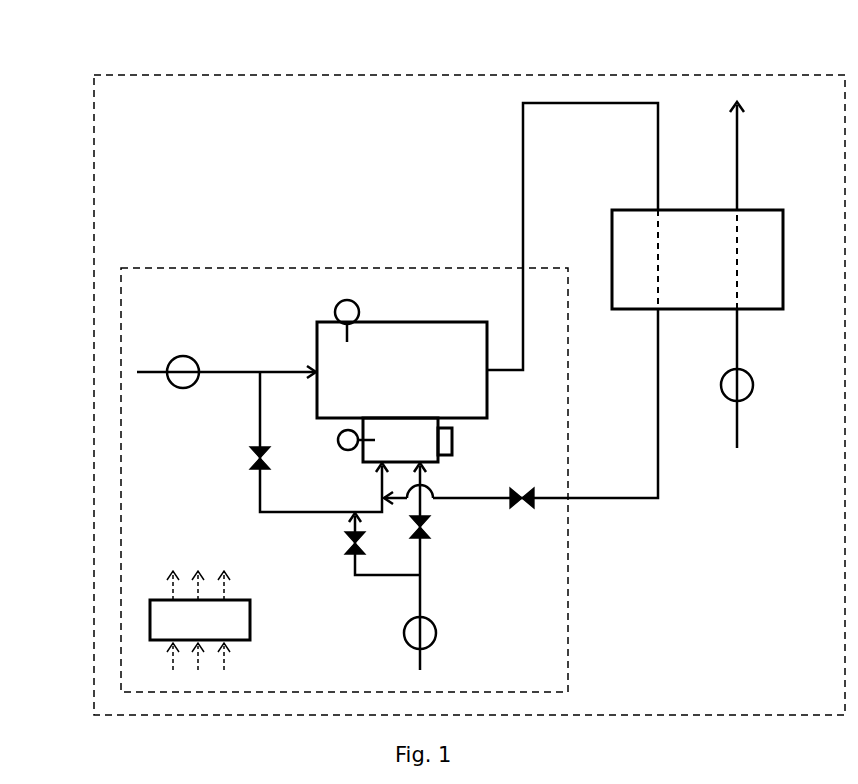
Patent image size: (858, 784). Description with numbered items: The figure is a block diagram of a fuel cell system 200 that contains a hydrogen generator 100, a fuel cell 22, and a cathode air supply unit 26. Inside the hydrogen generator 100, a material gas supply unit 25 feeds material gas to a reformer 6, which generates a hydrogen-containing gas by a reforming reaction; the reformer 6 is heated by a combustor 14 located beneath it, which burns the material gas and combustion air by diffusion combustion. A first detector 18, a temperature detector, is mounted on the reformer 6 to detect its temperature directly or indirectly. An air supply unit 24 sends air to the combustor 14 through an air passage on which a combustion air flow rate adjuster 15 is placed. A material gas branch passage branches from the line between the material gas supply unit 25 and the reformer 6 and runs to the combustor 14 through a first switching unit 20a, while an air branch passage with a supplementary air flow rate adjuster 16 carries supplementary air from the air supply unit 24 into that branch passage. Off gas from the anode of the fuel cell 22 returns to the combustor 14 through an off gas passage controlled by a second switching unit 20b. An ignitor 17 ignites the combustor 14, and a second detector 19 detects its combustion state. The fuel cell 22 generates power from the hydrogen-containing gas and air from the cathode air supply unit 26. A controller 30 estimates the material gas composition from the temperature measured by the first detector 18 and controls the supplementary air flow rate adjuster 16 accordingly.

The fuel cell system 200 is at (688, 74).
The hydrogen generator 100 is at (314, 268).
The reformer 6 is at (407, 384).
The first detector 18 is at (360, 306).
The combustor 14 is at (413, 453).
The ignitor 17 is at (455, 446).
The second detector 19 is at (340, 452).
The first switching unit 20a is at (254, 466).
The second switching unit 20b is at (521, 490).
The combustion air flow rate adjuster 15 is at (432, 524).
The supplementary air flow rate adjuster 16 is at (345, 549).
The air supply unit 24 is at (437, 636).
The material gas supply unit 25 is at (185, 390).
The fuel cell 22 is at (711, 274).
The cathode air supply unit 26 is at (755, 388).
The controller 30 is at (212, 632).